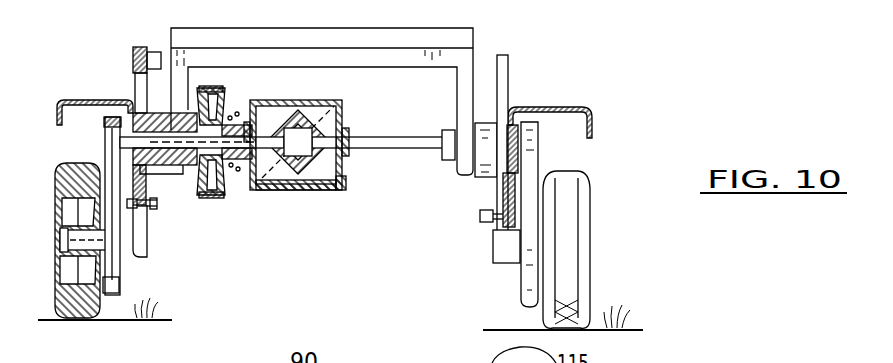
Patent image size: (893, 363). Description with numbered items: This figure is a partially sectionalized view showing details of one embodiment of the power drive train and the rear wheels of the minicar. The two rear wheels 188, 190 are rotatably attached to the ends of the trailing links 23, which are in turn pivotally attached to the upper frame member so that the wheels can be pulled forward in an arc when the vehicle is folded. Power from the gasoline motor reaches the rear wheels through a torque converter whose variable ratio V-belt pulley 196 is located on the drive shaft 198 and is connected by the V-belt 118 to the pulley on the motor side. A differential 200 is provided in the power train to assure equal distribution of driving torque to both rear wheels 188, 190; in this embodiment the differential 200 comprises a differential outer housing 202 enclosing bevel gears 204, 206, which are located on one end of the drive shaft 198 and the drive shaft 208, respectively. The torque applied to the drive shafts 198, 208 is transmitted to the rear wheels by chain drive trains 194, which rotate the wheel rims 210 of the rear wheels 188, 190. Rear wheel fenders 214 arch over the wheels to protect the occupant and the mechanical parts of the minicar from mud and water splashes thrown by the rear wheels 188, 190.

The trailing links 23 is at (505, 87).
The V-belt 118 is at (213, 198).
The rear wheel 188 is at (570, 265).
The rear wheel 190 is at (78, 313).
The chain drive trains 194 is at (110, 168).
The variable ratio V-belt pulley 196 is at (222, 103).
The drive shaft 198 is at (174, 158).
The differential 200 is at (312, 192).
The differential outer housing 202 is at (334, 186).
The bevel gear 204 is at (278, 160).
The bevel gear 206 is at (330, 185).
The drive shaft 208 is at (411, 147).
The wheel rims 210 is at (80, 253).
The rear wheel fenders 214 is at (98, 97).